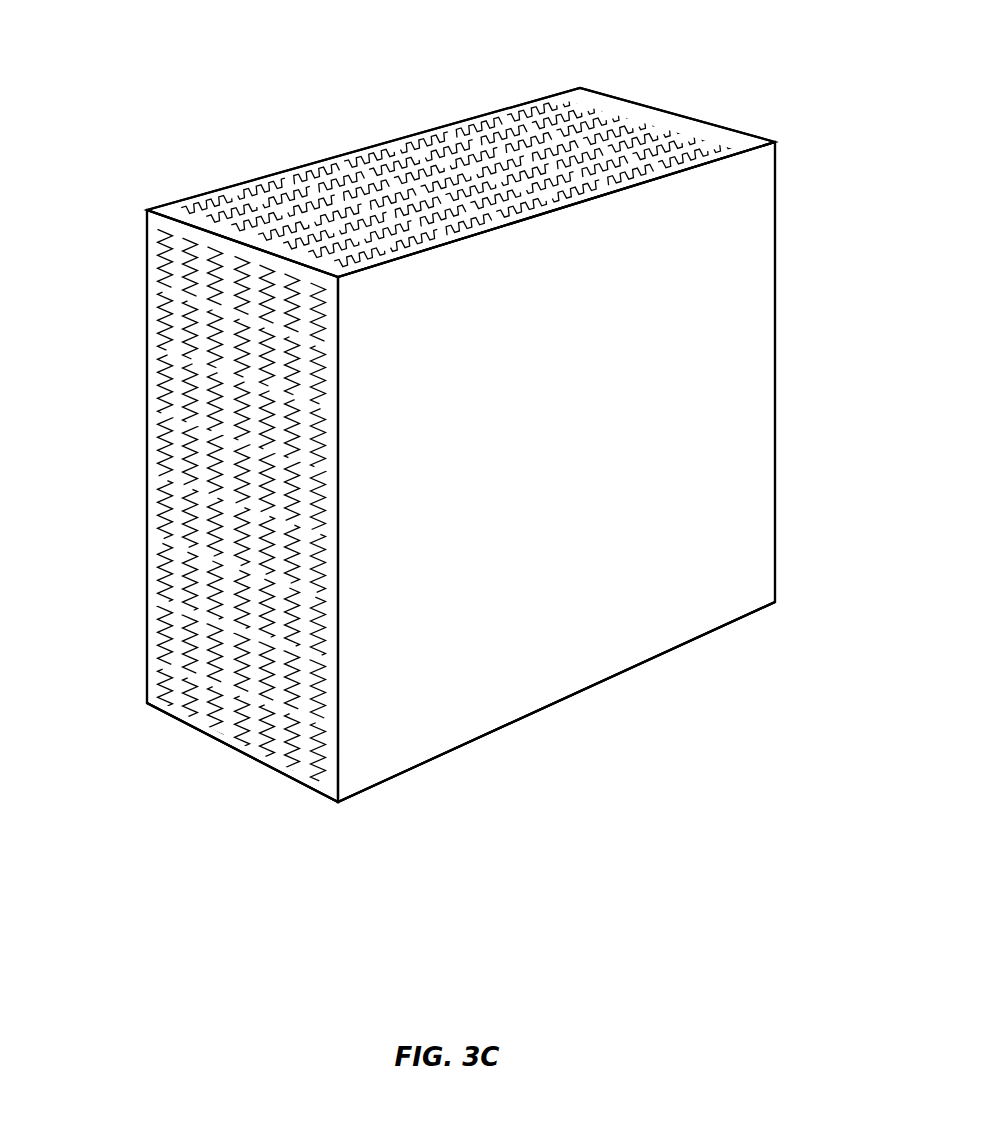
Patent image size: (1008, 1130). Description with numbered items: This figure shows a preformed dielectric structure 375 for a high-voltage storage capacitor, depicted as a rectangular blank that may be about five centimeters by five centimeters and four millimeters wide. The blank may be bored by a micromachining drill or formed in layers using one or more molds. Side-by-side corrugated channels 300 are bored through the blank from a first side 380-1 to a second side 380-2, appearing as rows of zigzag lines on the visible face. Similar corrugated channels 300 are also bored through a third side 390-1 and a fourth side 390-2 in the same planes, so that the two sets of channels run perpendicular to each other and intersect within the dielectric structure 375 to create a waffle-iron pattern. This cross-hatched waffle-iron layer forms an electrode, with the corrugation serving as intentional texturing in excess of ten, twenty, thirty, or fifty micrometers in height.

The corrugated channels 300 is at (160, 252).
The dielectric structure 375 is at (150, 837).
The first side 380-1 is at (153, 428).
The second side 380-2 is at (775, 351).
The third side 390-1 is at (577, 93).
The fourth side 390-2 is at (588, 686).